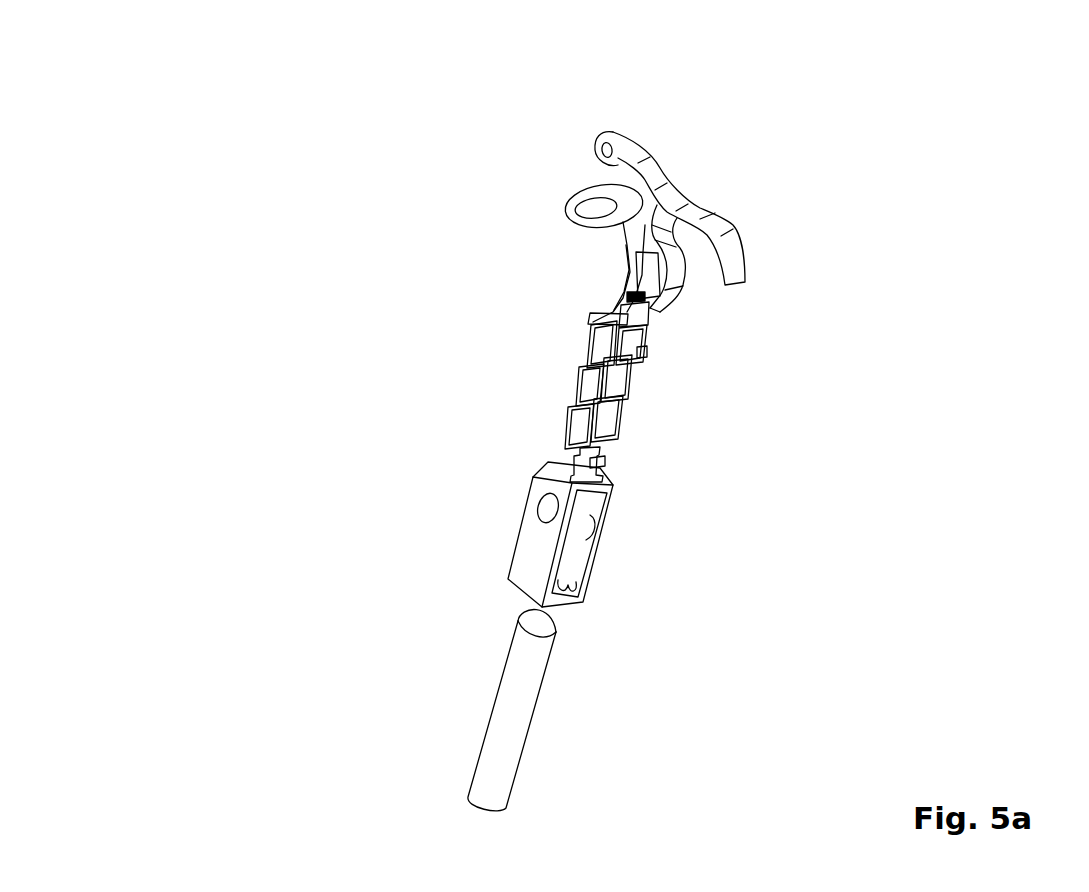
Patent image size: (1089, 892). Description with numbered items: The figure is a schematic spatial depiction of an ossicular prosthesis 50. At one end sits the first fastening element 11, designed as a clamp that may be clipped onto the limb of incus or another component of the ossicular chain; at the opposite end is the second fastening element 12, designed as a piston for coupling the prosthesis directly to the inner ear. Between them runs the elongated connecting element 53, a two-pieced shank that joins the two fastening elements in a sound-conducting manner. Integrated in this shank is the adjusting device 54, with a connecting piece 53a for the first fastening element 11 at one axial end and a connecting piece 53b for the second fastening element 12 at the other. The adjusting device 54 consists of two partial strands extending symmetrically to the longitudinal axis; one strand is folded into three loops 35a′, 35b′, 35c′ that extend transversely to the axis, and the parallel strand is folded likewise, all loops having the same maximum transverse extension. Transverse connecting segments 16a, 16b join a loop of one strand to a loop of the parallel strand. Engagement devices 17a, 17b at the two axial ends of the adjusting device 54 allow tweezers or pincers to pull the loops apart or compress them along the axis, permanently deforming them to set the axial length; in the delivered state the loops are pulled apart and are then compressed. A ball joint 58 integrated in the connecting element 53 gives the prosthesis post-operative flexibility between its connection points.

The ossicular prosthesis 50 is at (323, 165).
The first fastening element 11 is at (727, 224).
The connecting element 53 is at (172, 215).
The connecting piece 53a is at (623, 266).
The engagement device 17a is at (624, 293).
The adjusting device 54 is at (362, 297).
The loop 35a′ is at (593, 332).
The loop 35b′ is at (578, 367).
The loop 35c′ is at (570, 405).
The connecting segment 16a is at (647, 338).
The connecting segment 16b is at (603, 462).
The engagement device 17b is at (580, 453).
The connecting piece 53b is at (536, 611).
The ball joint 58 is at (529, 519).
The second fastening element 12 is at (482, 753).